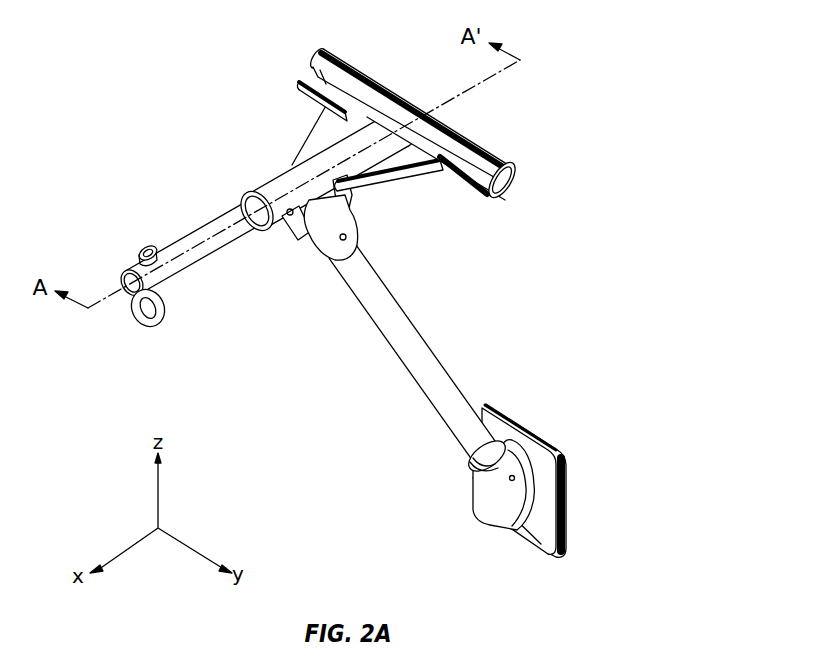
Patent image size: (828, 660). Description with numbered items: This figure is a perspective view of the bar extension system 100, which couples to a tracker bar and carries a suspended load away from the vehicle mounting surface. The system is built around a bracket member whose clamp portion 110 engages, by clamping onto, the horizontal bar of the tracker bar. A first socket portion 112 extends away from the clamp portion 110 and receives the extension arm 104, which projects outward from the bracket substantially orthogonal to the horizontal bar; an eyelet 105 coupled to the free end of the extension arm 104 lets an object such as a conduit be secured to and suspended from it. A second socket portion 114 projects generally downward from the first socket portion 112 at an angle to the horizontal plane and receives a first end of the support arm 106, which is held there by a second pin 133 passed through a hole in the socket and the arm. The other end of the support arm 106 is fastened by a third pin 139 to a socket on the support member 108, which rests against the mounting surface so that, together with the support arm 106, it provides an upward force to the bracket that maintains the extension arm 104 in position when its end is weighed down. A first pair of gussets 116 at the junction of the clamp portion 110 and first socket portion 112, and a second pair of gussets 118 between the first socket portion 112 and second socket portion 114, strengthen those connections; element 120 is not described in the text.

The bar extension system 100 is at (665, 132).
The extension arm 104 is at (203, 231).
The eyelet 105 is at (160, 315).
The support arm 106 is at (432, 382).
The support member 108 is at (540, 533).
The clamp portion 110 is at (378, 79).
The first socket portion 112 is at (280, 178).
The second socket portion 114 is at (325, 243).
The first pair of gussets 116 is at (333, 131).
The second pair of gussets 118 is at (292, 231).
The fastener 120 is at (323, 78).
The second pin 133 is at (347, 240).
The third pin 139 is at (512, 484).